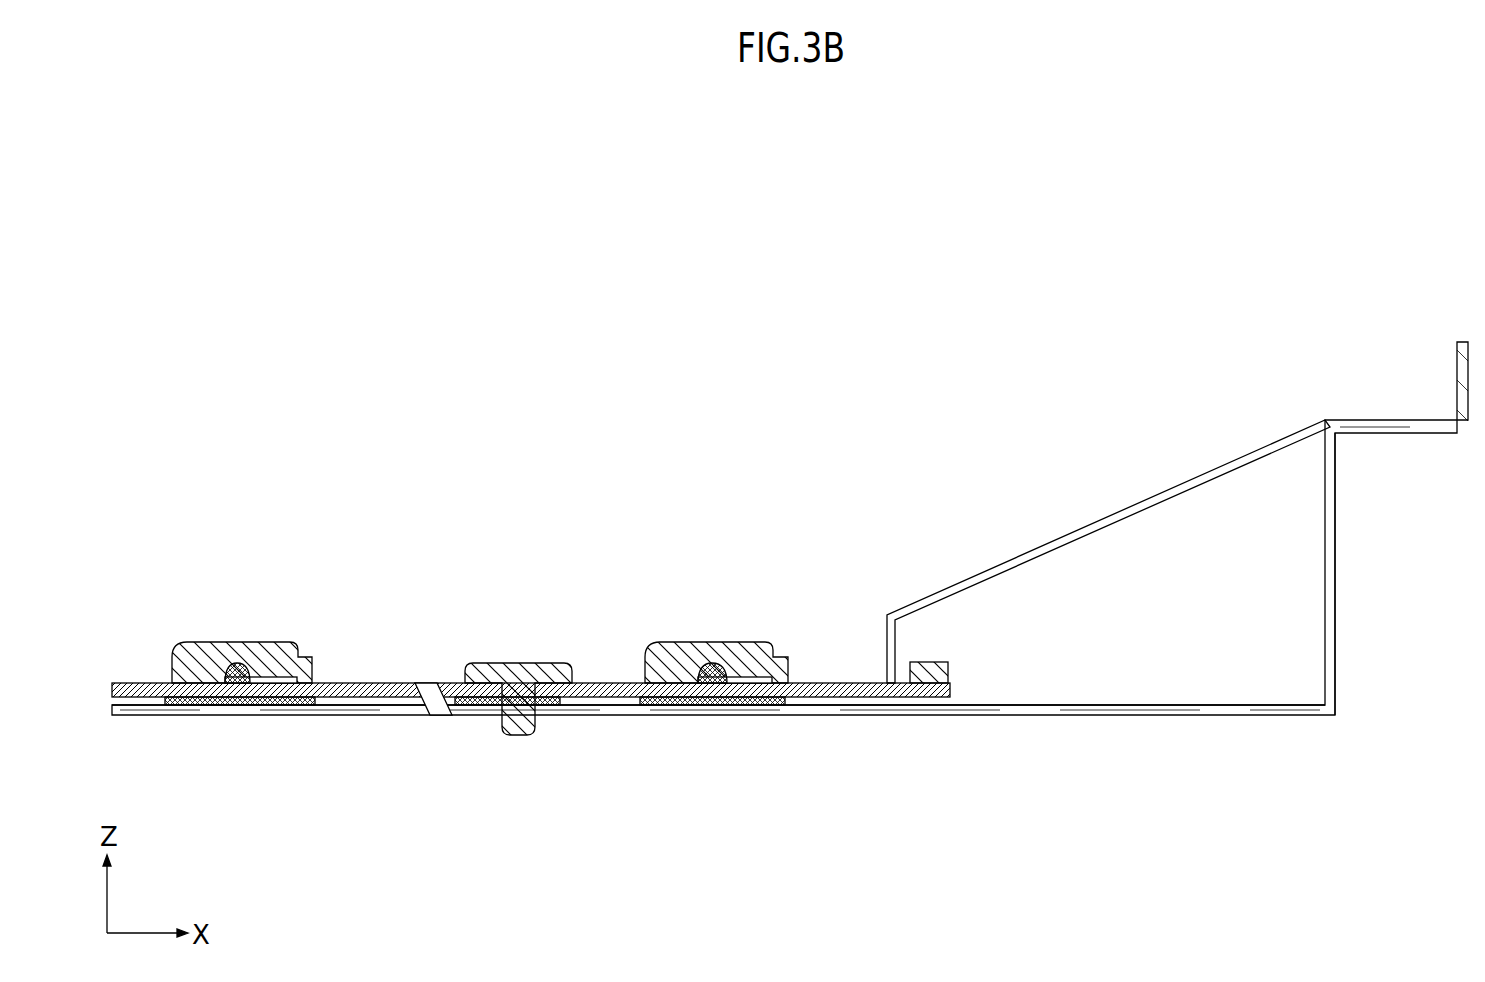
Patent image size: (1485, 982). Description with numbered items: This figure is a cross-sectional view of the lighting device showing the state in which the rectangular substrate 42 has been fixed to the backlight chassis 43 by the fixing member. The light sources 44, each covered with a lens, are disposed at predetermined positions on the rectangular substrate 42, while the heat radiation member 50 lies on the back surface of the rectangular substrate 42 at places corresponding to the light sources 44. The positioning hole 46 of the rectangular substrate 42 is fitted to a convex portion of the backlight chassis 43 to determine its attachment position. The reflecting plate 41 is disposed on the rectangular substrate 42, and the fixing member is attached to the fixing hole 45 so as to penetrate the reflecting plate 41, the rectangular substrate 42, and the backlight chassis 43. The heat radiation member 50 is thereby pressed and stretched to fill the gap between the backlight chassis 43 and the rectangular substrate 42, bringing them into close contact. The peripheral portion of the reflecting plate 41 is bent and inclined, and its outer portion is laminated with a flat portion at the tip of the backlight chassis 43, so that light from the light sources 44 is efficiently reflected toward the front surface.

The reflecting plate 41 is at (992, 569).
The rectangular substrate 42 is at (826, 697).
The backlight chassis 43 is at (1100, 712).
The light source 44 is at (242, 655).
The fixing hole 45 is at (540, 665).
The positioning hole 46 is at (440, 683).
The heat radiation member 50 is at (731, 700).